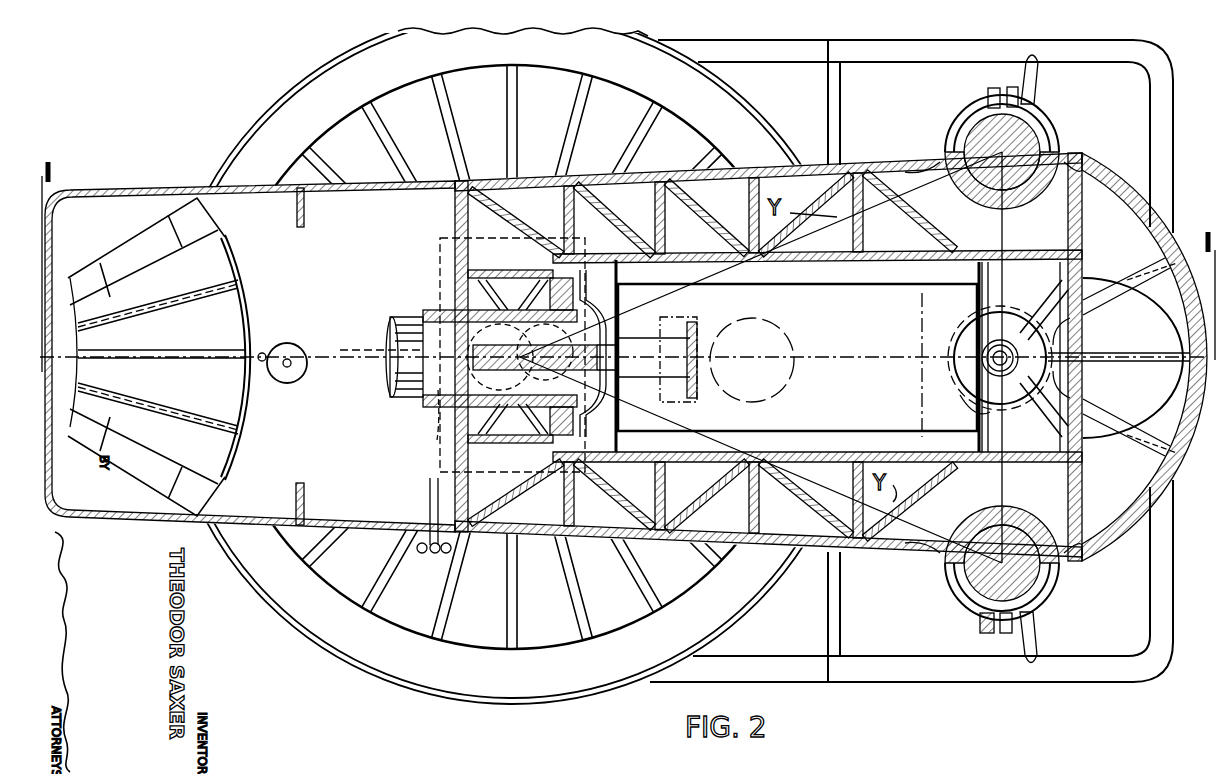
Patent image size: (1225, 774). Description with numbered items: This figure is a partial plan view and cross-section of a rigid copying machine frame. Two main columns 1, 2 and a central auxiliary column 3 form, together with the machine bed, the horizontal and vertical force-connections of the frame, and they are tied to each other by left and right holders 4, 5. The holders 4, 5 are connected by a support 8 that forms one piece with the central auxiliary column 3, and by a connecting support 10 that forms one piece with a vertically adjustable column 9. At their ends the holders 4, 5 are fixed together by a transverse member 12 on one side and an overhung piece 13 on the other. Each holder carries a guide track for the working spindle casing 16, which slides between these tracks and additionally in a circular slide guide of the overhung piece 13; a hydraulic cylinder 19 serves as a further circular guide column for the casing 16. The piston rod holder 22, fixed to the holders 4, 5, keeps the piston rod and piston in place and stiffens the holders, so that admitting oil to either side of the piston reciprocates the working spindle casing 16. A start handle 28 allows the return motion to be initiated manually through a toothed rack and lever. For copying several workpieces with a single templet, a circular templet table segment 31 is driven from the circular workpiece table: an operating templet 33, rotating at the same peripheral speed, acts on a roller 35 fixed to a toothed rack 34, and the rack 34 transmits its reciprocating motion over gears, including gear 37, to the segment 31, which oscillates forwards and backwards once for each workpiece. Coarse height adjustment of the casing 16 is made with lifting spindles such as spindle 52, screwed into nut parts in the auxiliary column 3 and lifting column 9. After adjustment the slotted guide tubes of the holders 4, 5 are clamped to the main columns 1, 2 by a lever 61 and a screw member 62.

The main column 1 is at (984, 140).
The main column 2 is at (958, 596).
The central auxiliary column 3 is at (442, 302).
The left holder 4 is at (897, 165).
The right holder 5 is at (862, 542).
The support 8 is at (440, 248).
The vertically adjustable column 9 is at (962, 344).
The connecting support 10 is at (985, 413).
The transverse member 12 is at (1178, 470).
The overhung piece 13 is at (455, 210).
The working spindle casing 16 is at (890, 313).
The hydraulic cylinder 19 is at (652, 350).
The piston rod holder 22 is at (600, 420).
The start handle 28 is at (433, 553).
The circular templet table segment 31 is at (218, 450).
The operating templet 33 is at (437, 440).
The toothed rack 34 is at (362, 352).
The roller 35 is at (292, 345).
The gear 37 is at (263, 352).
The lifting spindle 52 is at (1053, 338).
The lever 61 is at (1028, 665).
The screw member 62 is at (985, 635).